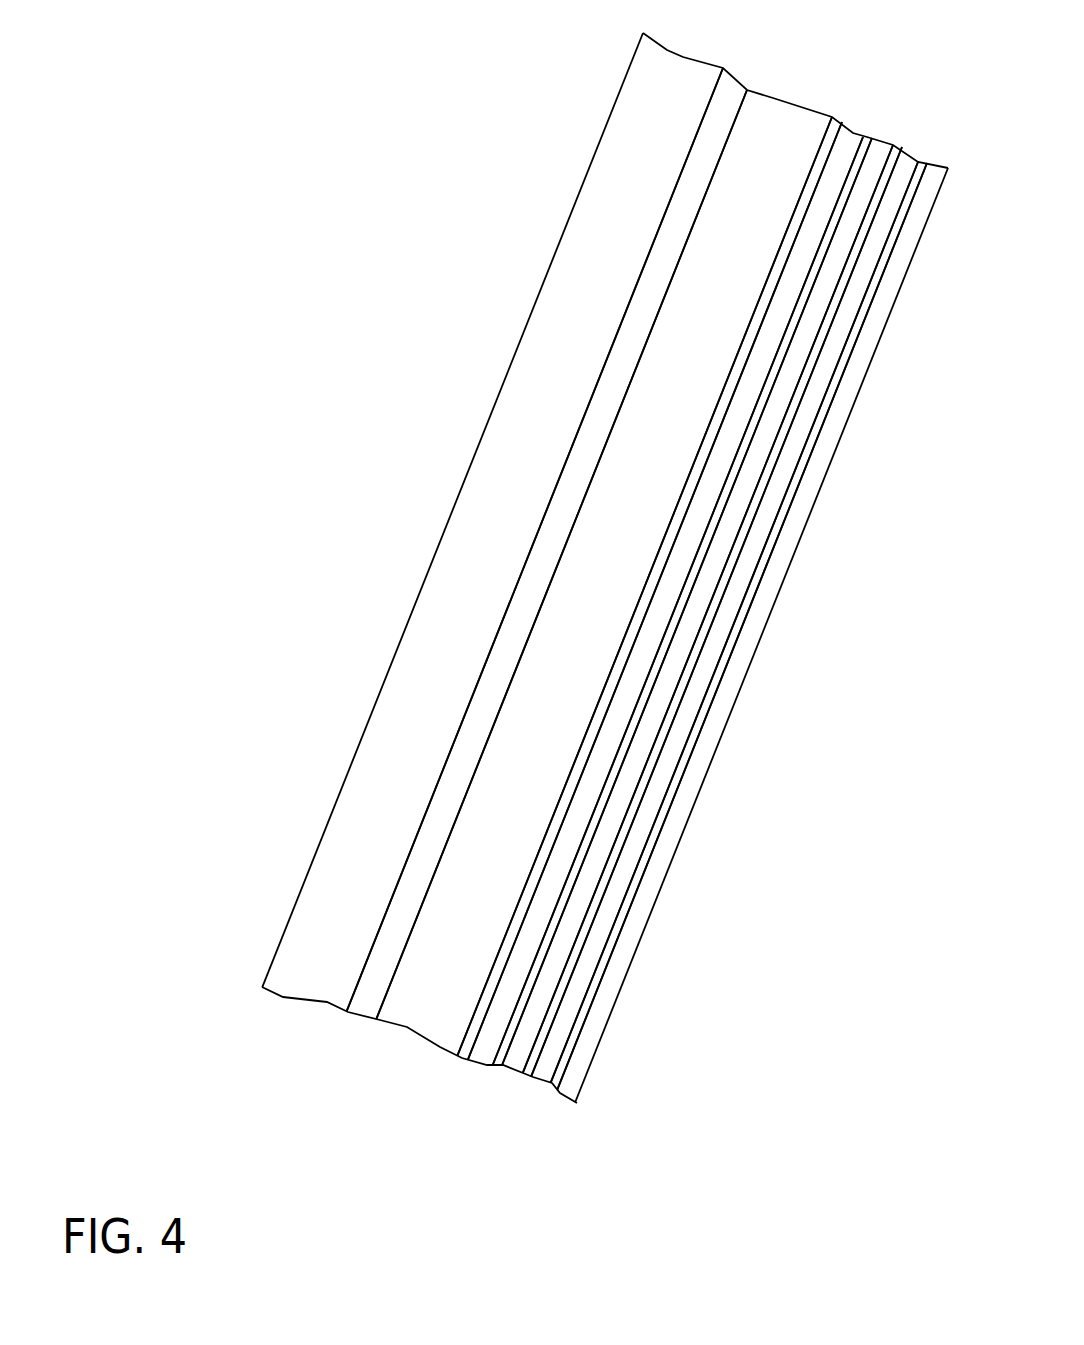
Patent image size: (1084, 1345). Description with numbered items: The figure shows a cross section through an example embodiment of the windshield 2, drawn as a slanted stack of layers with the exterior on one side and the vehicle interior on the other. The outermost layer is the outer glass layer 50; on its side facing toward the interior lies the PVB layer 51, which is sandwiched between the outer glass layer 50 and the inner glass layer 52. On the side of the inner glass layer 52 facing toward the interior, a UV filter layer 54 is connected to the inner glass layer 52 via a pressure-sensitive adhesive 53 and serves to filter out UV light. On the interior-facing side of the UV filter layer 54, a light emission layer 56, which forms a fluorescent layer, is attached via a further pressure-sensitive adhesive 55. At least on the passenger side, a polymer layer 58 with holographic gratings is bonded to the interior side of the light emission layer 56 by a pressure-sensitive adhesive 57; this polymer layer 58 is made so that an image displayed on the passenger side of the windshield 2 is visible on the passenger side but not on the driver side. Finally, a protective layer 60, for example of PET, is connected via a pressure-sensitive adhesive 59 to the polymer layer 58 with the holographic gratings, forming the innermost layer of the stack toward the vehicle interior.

The windshield 2 is at (820, 76).
The outer glass layer 50 is at (640, 113).
The PVB layer 51 is at (667, 261).
The inner glass layer 52 is at (683, 373).
The pressure-sensitive adhesive 53 is at (678, 526).
The UV filter layer 54 is at (487, 1058).
The pressure-sensitive adhesive 55 is at (500, 1062).
The light emission layer 56 is at (678, 650).
The pressure-sensitive adhesive 57 is at (667, 724).
The polymer layer with holographic gratings 58 is at (651, 809).
The pressure-sensitive adhesive 59 is at (642, 872).
The protective layer 60 is at (636, 928).